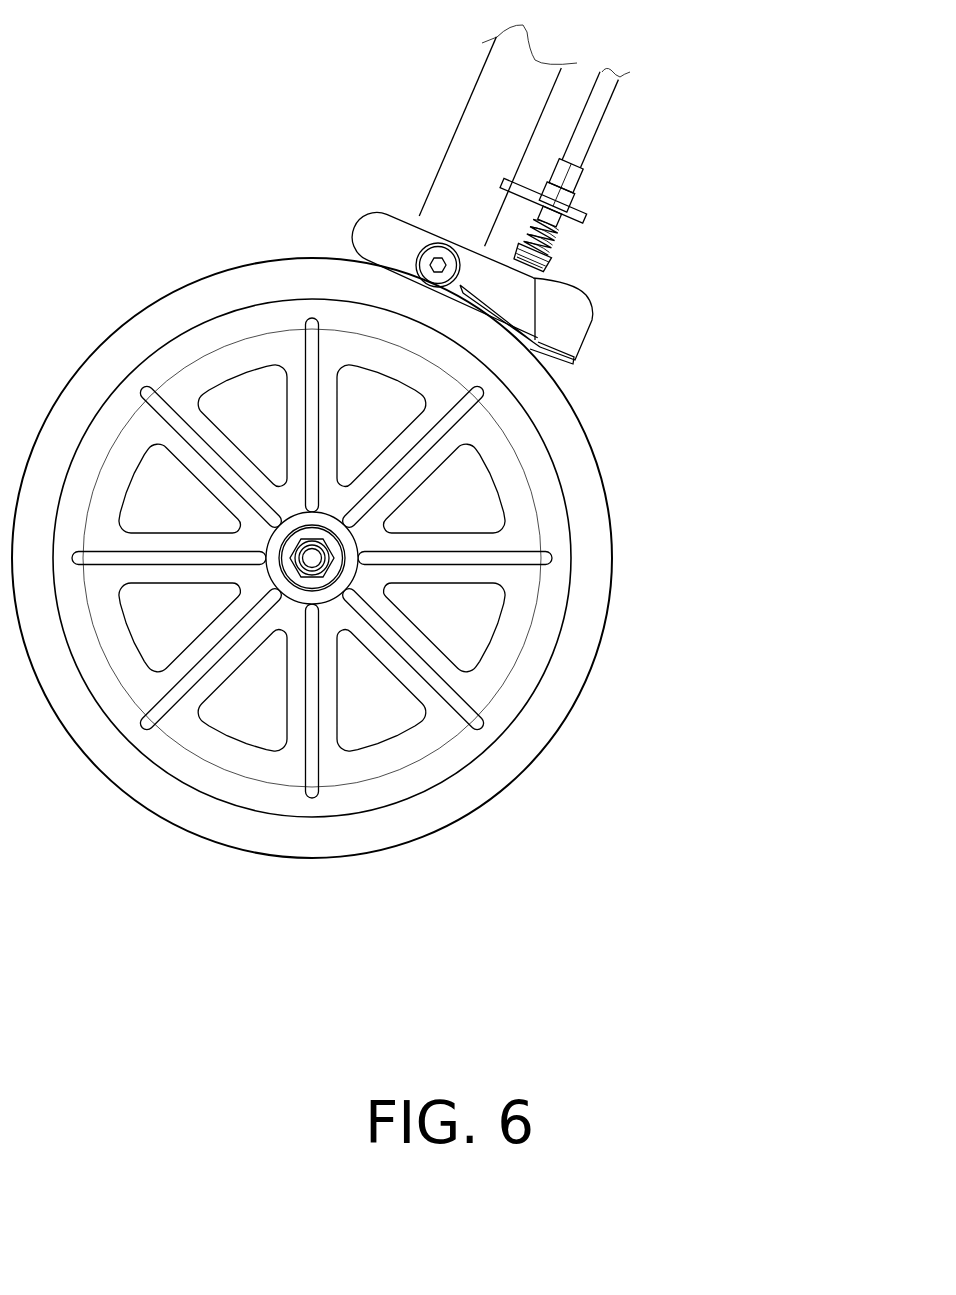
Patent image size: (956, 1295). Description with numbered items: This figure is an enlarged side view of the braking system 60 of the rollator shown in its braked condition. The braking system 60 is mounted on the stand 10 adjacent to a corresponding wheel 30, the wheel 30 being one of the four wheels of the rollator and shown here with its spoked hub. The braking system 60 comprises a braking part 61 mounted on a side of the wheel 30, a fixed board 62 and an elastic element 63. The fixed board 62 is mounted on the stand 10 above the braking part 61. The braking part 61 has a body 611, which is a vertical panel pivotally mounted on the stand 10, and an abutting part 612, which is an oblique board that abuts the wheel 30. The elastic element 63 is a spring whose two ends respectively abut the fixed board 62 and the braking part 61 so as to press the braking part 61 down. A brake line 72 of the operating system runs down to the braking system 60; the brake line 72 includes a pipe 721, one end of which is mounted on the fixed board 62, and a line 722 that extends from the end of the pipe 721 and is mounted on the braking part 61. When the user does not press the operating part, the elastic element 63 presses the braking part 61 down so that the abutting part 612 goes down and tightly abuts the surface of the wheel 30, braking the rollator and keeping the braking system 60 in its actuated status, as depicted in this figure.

The stand 10 is at (468, 123).
The wheel 30 is at (612, 464).
The braking system 60 is at (545, 268).
The braking part 61 is at (346, 226).
The body 611 is at (578, 307).
The abutting part 612 is at (535, 347).
The fixed board 62 is at (590, 213).
The elastic element 63 is at (553, 238).
The brake line 72 is at (635, 97).
The pipe 721 is at (588, 130).
The line 722 is at (546, 252).